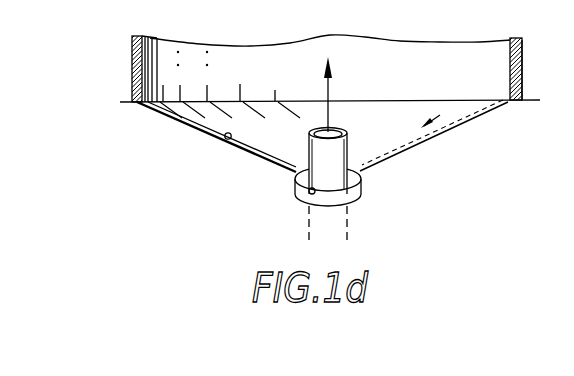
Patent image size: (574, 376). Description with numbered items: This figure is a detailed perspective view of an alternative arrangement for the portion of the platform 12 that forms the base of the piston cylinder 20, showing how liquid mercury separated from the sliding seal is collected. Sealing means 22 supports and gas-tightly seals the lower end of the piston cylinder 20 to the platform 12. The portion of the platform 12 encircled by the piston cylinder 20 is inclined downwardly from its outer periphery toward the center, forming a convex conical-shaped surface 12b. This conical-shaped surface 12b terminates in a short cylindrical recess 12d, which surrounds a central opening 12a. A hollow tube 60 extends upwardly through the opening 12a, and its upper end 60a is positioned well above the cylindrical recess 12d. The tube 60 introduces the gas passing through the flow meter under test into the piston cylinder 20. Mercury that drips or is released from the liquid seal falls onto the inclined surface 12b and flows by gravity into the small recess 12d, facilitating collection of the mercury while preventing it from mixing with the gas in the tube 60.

The platform 12 is at (128, 100).
The central opening 12a is at (311, 191).
The convex conical-shaped surface 12b is at (228, 138).
The short cylindrical recess 12d is at (362, 173).
The piston cylinder 20 is at (156, 36).
The sealing means 22 is at (163, 101).
The hollow tube 60 is at (348, 138).
The upper end of tube 60a is at (316, 130).